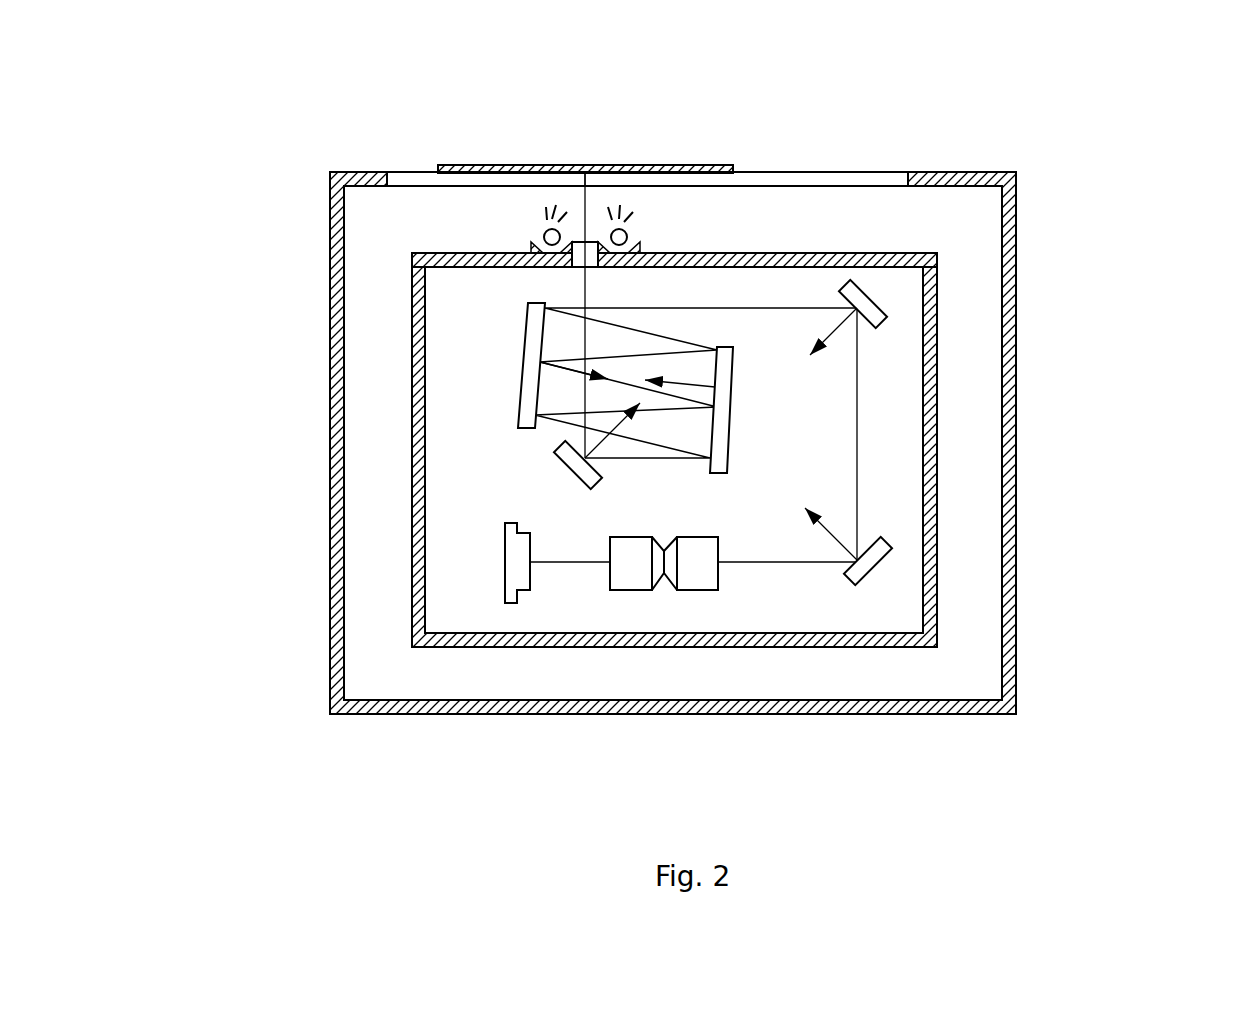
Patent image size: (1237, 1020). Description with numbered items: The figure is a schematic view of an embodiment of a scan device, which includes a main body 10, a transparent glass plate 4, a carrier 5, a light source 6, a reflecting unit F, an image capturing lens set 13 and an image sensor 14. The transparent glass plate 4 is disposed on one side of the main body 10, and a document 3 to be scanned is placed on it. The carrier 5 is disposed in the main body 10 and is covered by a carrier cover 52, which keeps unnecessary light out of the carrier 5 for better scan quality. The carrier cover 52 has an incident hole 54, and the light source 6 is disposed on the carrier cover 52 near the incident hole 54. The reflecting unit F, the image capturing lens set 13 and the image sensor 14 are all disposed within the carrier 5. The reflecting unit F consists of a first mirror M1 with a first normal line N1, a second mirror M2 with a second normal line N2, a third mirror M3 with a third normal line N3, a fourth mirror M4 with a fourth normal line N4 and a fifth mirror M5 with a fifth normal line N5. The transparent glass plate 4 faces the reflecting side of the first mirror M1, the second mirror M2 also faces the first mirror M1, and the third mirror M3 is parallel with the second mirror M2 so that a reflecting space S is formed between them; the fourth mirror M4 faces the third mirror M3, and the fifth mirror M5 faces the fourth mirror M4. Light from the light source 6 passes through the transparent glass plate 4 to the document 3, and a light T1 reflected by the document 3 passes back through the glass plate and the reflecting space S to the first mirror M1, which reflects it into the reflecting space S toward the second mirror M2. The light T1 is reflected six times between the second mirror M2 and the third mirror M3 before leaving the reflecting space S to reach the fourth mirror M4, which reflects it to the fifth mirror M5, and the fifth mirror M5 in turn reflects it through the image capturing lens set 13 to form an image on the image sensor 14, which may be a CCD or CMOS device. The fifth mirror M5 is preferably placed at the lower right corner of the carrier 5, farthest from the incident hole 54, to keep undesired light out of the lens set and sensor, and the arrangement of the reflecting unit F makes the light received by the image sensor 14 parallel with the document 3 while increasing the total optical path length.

The main body 10 is at (336, 230).
The transparent glass plate 4 is at (850, 181).
The document 3 is at (684, 168).
The light T1 is at (583, 183).
The carrier cover 52 is at (465, 258).
The carrier 5 is at (930, 597).
The incident hole 54 is at (592, 250).
The light source 6 is at (633, 231).
The reflecting space S is at (617, 333).
The first mirror M1 is at (553, 460).
The second mirror M2 is at (735, 397).
The third mirror M3 is at (518, 395).
The fourth mirror M4 is at (878, 300).
The fifth mirror M5 is at (878, 565).
The first normal line N1 is at (632, 430).
The second normal line N2 is at (681, 372).
The third normal line N3 is at (574, 353).
The fourth normal line N4 is at (821, 331).
The fifth normal line N5 is at (831, 517).
The reflecting unit F is at (1165, 275).
The image sensor 14 is at (503, 595).
The image capturing lens set 13 is at (637, 592).